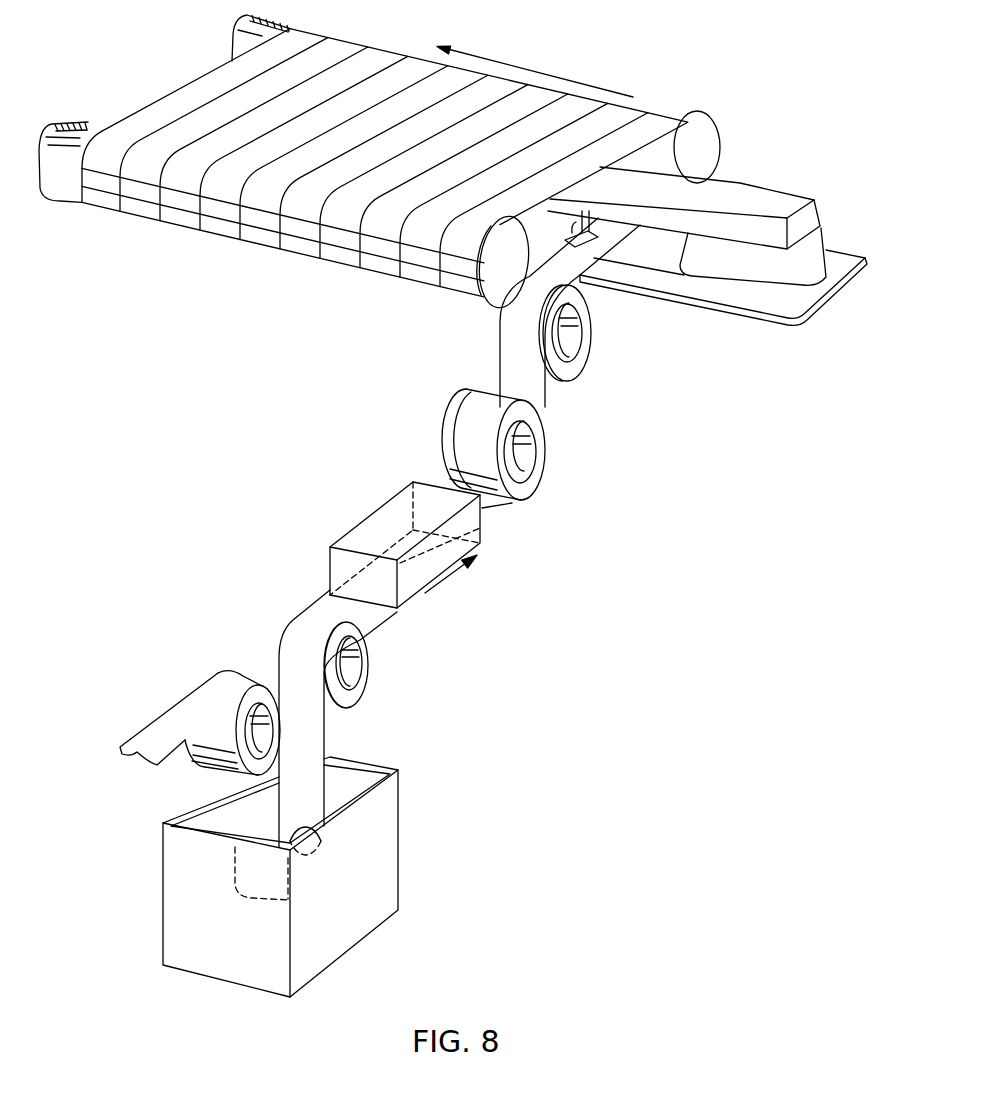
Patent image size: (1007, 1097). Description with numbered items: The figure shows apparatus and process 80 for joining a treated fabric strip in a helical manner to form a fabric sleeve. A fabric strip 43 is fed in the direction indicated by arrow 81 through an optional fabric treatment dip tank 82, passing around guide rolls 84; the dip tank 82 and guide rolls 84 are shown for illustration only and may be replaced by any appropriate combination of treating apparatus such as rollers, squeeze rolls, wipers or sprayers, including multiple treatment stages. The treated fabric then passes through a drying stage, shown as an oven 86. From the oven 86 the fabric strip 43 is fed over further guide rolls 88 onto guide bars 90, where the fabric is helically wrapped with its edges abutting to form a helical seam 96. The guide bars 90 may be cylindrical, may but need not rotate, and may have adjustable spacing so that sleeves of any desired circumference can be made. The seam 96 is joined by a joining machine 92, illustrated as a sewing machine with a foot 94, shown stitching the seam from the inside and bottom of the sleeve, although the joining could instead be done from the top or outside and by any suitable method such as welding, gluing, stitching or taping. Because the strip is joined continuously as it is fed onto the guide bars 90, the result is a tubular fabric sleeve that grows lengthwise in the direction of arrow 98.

The fabric strip 43 is at (158, 727).
The apparatus and process 80 is at (801, 82).
The arrow 81 is at (460, 574).
The fabric treatment dip tank 82 is at (390, 827).
The guide rolls 84 is at (253, 725).
The oven 86 is at (377, 527).
The guide rolls 88 is at (543, 430).
The guide bars 90 is at (242, 35).
The joining machine 92 is at (762, 202).
The foot 94 is at (576, 244).
The helical seam 96 is at (273, 230).
The arrow 98 is at (547, 70).